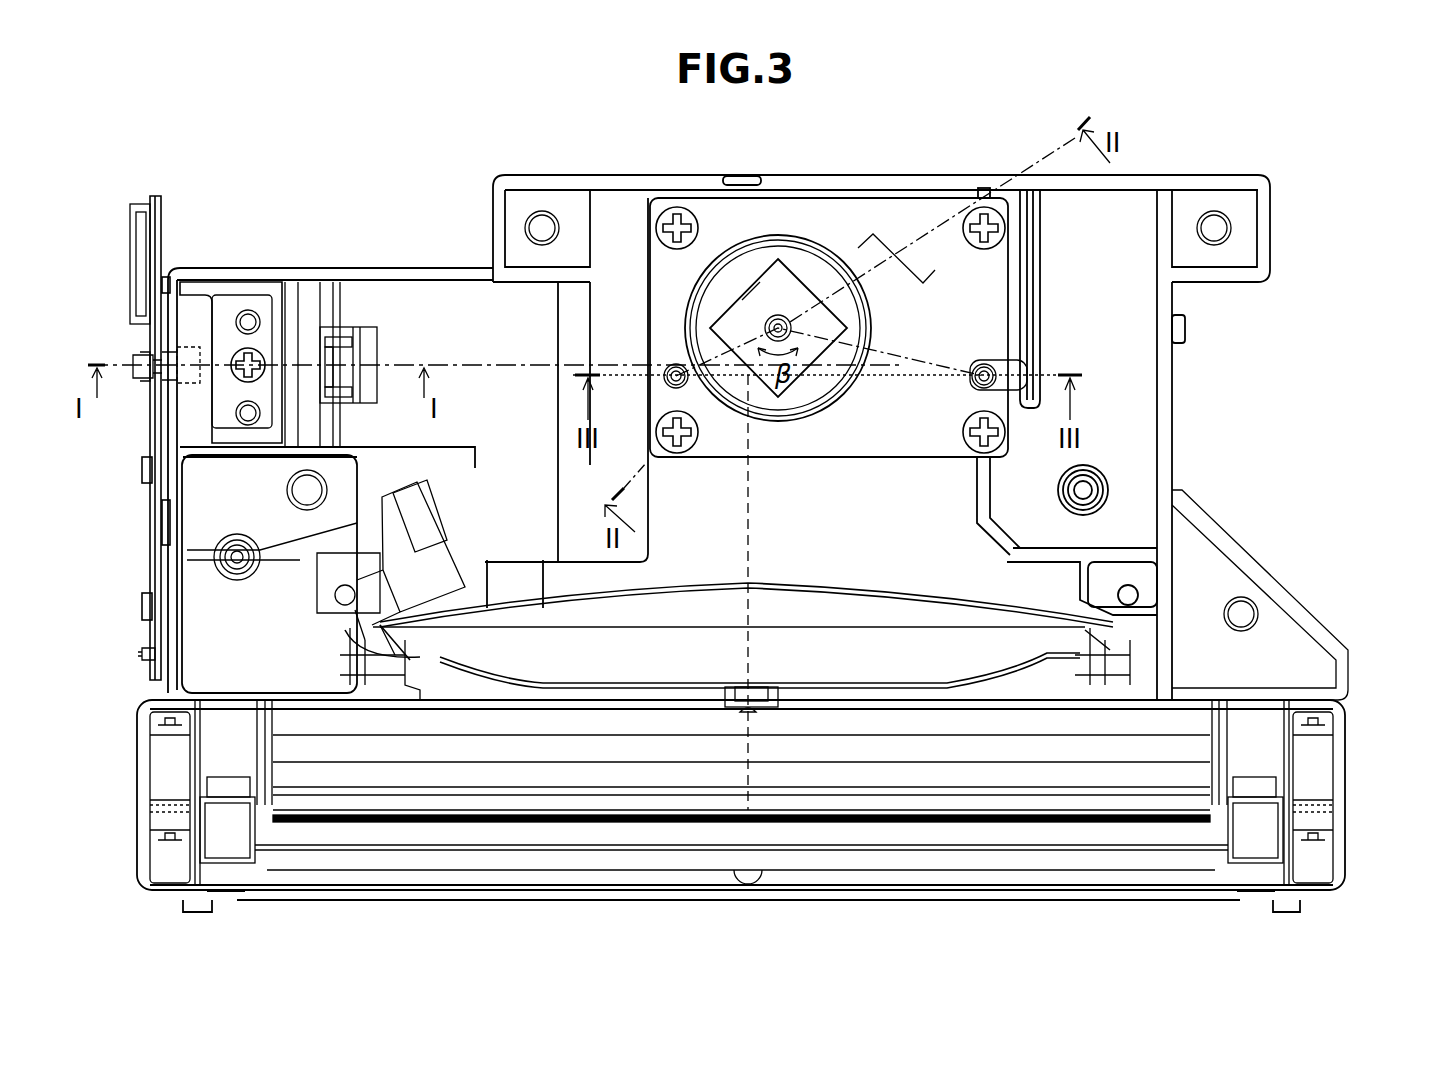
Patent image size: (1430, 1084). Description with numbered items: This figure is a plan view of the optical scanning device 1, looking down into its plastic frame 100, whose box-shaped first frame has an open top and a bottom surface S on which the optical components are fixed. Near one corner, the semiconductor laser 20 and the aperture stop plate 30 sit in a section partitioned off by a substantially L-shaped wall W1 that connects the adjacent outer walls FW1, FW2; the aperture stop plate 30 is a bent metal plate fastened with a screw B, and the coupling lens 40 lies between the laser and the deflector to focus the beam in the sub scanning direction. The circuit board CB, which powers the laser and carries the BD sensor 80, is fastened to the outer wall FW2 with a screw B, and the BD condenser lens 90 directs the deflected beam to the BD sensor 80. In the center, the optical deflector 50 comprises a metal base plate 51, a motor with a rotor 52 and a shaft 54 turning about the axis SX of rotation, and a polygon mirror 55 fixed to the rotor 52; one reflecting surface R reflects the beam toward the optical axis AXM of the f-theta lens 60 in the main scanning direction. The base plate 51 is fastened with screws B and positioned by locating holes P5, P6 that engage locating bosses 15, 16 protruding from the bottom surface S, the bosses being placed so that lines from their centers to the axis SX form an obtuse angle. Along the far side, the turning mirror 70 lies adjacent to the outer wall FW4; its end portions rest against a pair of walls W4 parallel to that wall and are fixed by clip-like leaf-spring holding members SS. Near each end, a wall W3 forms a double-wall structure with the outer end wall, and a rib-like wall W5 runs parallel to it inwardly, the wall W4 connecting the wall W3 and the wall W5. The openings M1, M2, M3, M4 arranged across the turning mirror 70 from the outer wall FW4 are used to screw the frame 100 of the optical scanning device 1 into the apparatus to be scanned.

The optical scanning device 1 is at (401, 182).
The frame 100 is at (918, 175).
The opening M1 is at (1255, 608).
The opening M2 is at (1228, 228).
The opening M3 is at (535, 230).
The opening M4 is at (290, 485).
The base plate 51 is at (862, 428).
The screw B is at (668, 207).
The optical deflector 50 is at (790, 228).
The rotor 52 is at (716, 268).
The axis of rotation SX is at (772, 318).
The shaft 54 is at (800, 278).
The polygon mirror 55 is at (742, 300).
The reflecting surface R is at (720, 307).
The locating boss 15 is at (668, 385).
The locating boss 16 is at (984, 366).
The locating hole P5 is at (668, 366).
The locating hole P6 is at (1000, 373).
The optical axis AXM is at (752, 530).
The outer wall FW1 is at (268, 266).
The aperture stop plate 30 is at (232, 303).
The wall W1 is at (288, 320).
The coupling lens 40 is at (326, 345).
The bottom surface S is at (405, 312).
The circuit board CB is at (150, 577).
The outer wall FW2 is at (165, 305).
The semiconductor laser 20 is at (180, 390).
The BD sensor 80 is at (142, 660).
The BD condenser lens 90 is at (400, 520).
The f-theta lens 60 is at (838, 660).
The turning mirror 70 is at (965, 832).
The outer wall FW4 is at (468, 900).
The wall W3 is at (190, 783).
The wall W5 is at (268, 745).
The wall W4 is at (262, 800).
The holding member SS is at (228, 840).